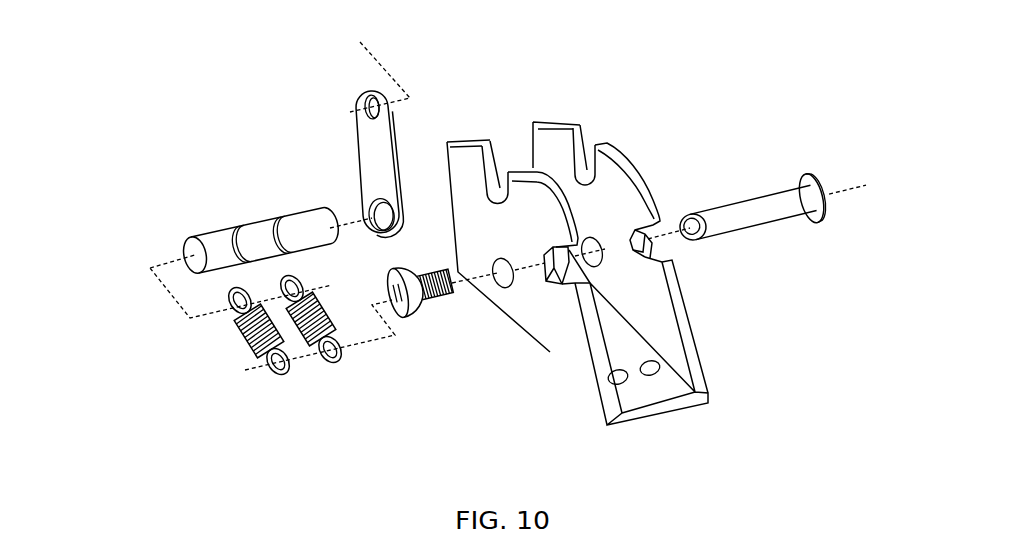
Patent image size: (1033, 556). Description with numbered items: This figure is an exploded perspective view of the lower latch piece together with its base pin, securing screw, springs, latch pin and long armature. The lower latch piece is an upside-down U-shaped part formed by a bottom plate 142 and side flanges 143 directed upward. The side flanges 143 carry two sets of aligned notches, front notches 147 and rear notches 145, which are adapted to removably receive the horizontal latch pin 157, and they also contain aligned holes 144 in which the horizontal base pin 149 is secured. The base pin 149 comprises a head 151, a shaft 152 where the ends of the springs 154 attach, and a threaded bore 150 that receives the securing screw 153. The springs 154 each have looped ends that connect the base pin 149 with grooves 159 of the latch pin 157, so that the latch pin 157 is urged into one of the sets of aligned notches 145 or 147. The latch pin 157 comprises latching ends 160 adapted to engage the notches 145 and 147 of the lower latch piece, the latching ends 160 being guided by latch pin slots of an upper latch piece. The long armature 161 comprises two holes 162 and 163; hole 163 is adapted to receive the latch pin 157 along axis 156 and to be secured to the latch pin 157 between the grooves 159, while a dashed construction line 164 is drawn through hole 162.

The bottom plate 142 is at (680, 408).
The side flanges 143 is at (621, 251).
The aligned holes 144 is at (494, 285).
The rear notches 145 is at (640, 258).
The front notches 147 is at (506, 173).
The base pin 149 is at (792, 230).
The threaded bore 150 is at (700, 240).
The head 151 is at (831, 177).
The shaft 152 is at (783, 222).
The securing screw 153 is at (410, 318).
The springs 154 is at (333, 371).
The axis 156 is at (393, 294).
The latch pin 157 is at (185, 241).
The grooves 159 is at (277, 215).
The latching ends 160 is at (205, 166).
The long armature 161 is at (363, 119).
The hole 162 is at (367, 92).
The hole 163 is at (383, 220).
The hole axis 164 is at (382, 73).